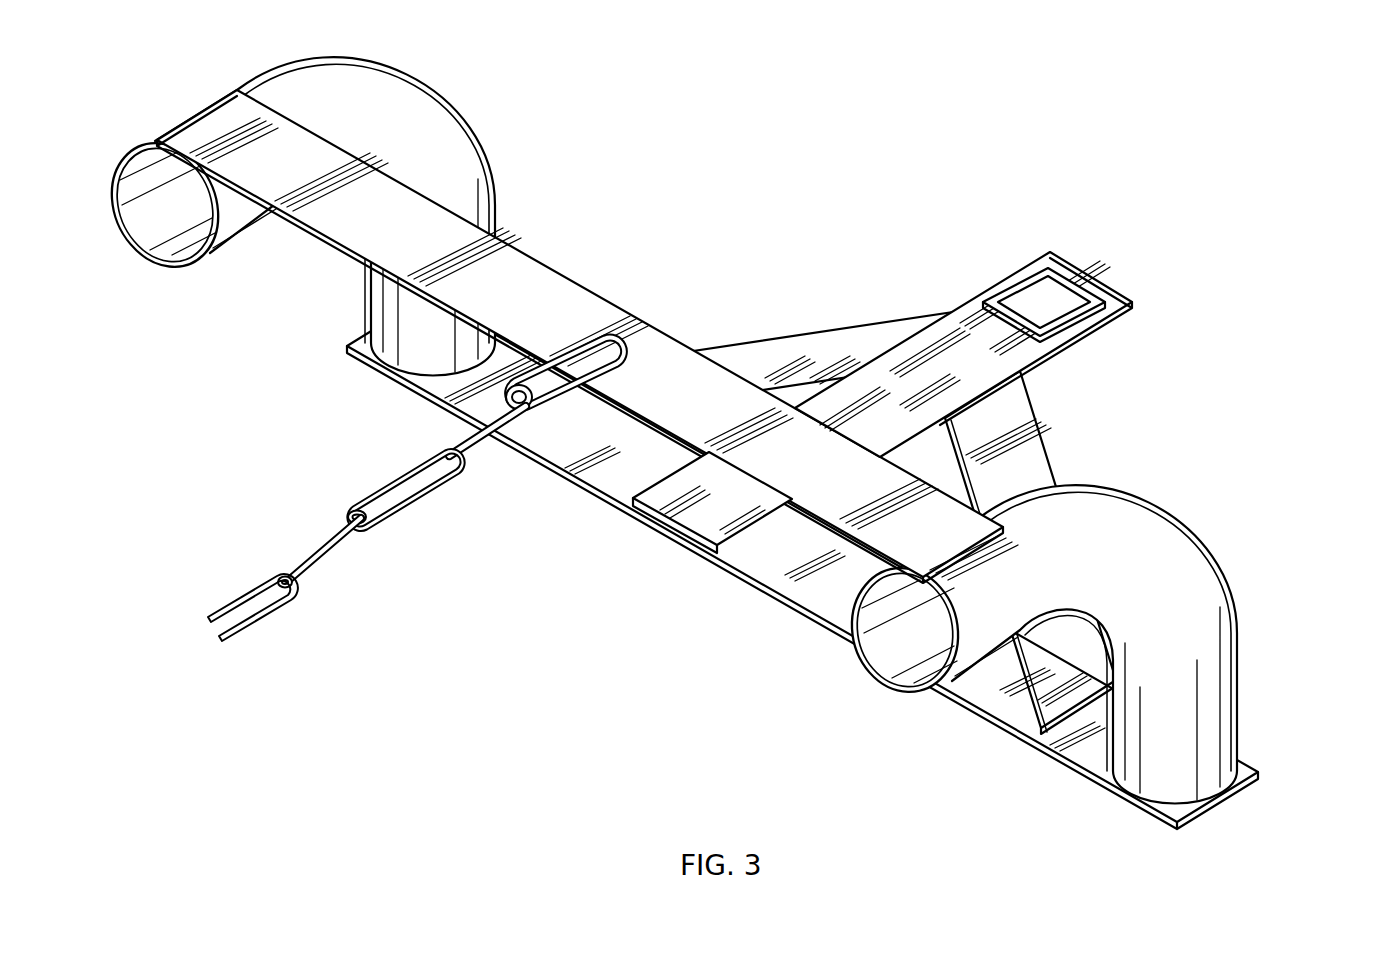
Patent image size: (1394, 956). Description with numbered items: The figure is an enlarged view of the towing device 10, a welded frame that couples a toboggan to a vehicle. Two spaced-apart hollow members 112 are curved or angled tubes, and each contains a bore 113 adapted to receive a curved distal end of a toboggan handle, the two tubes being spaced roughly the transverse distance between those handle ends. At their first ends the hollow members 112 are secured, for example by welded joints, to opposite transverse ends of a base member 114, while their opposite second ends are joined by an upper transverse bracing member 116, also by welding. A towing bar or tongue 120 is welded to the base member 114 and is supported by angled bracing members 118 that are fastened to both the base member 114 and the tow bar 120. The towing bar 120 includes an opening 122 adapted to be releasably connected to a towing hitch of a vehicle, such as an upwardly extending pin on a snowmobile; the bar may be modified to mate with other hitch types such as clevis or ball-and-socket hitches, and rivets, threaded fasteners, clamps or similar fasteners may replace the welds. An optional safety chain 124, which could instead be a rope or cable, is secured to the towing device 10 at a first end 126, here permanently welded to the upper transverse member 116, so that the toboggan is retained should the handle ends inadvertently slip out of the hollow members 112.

The towing device 10 is at (1312, 296).
The hollow member 112 is at (437, 103).
The bore 113 is at (155, 222).
The base member 114 is at (573, 447).
The upper transverse bracing member 116 is at (503, 262).
The angled bracing member 118 is at (803, 338).
The towing bar 120 is at (919, 389).
The opening 122 is at (1113, 287).
The safety chain 124 is at (397, 517).
The first end 126 is at (617, 343).